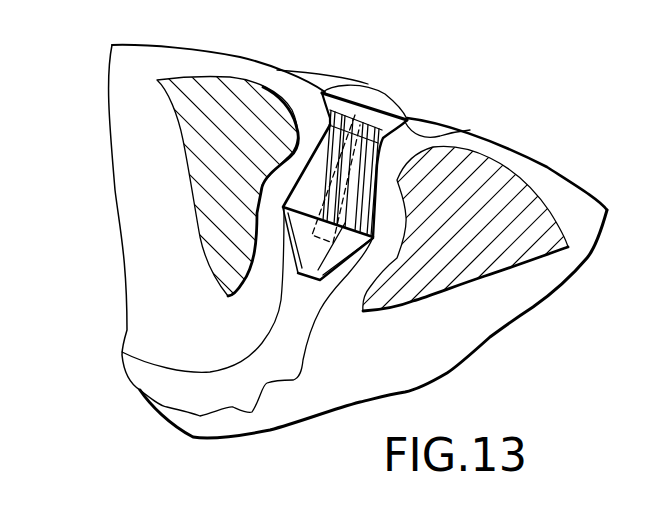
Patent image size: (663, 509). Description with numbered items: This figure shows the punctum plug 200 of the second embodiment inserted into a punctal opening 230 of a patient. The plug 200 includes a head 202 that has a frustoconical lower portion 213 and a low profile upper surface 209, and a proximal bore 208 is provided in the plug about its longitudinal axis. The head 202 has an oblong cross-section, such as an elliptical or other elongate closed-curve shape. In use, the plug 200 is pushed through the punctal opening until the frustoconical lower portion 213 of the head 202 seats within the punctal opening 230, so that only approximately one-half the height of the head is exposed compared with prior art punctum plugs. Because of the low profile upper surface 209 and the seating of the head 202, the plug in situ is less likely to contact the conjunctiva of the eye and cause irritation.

The plug 200 is at (320, 180).
The head 202 is at (384, 91).
The proximal bore 208 is at (378, 93).
The upper surface 209 is at (350, 97).
The lower portion 213 is at (326, 93).
The punctal opening 230 is at (452, 133).